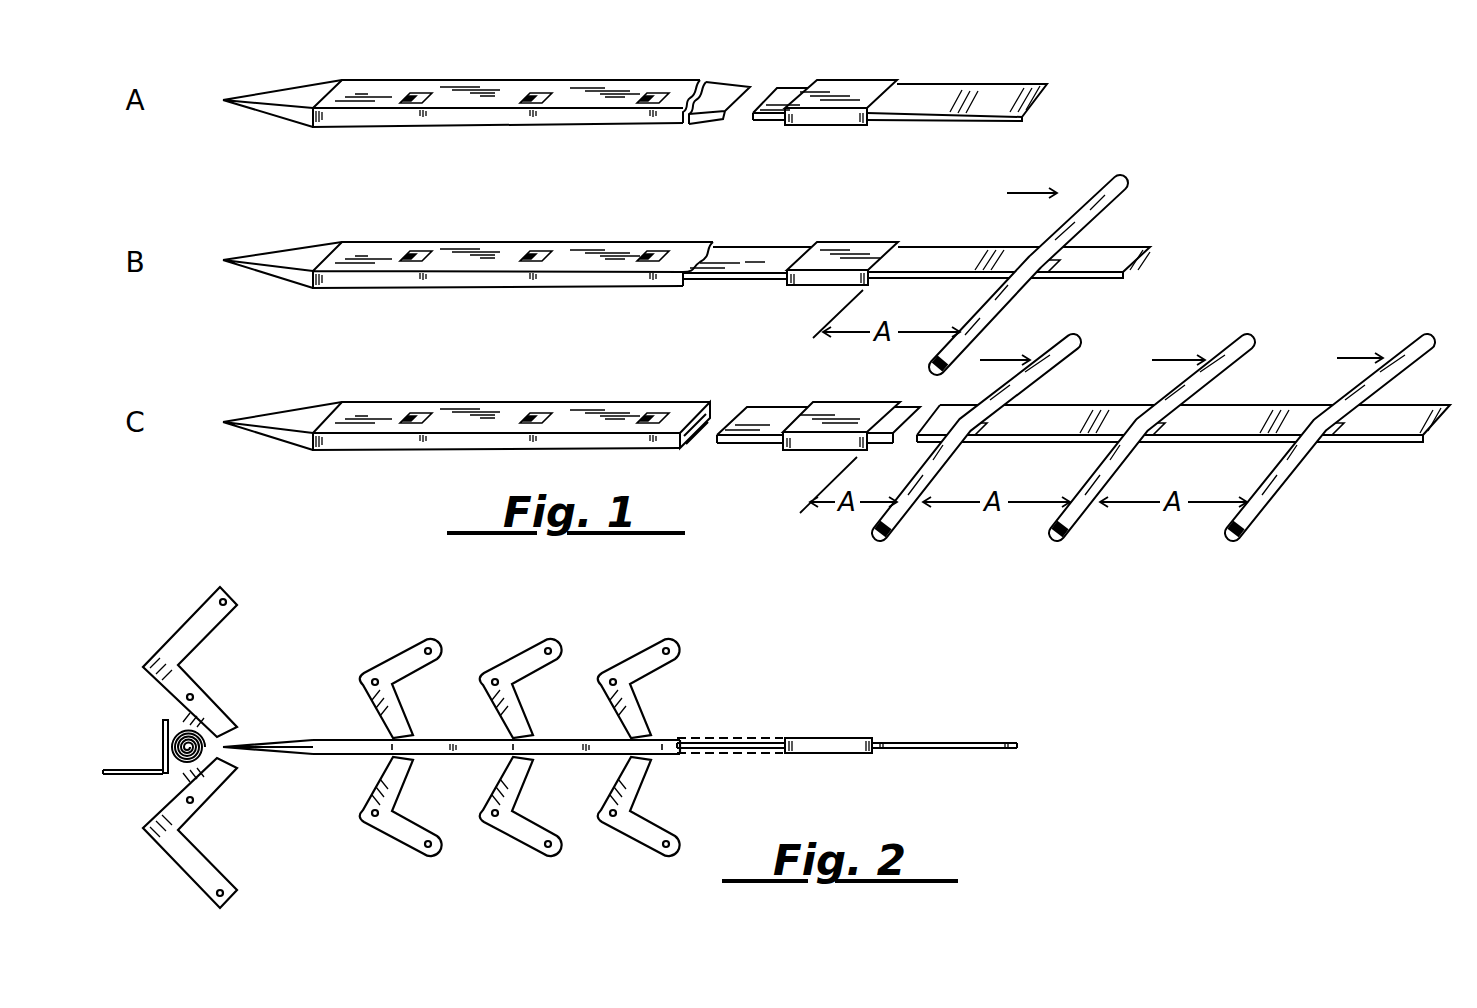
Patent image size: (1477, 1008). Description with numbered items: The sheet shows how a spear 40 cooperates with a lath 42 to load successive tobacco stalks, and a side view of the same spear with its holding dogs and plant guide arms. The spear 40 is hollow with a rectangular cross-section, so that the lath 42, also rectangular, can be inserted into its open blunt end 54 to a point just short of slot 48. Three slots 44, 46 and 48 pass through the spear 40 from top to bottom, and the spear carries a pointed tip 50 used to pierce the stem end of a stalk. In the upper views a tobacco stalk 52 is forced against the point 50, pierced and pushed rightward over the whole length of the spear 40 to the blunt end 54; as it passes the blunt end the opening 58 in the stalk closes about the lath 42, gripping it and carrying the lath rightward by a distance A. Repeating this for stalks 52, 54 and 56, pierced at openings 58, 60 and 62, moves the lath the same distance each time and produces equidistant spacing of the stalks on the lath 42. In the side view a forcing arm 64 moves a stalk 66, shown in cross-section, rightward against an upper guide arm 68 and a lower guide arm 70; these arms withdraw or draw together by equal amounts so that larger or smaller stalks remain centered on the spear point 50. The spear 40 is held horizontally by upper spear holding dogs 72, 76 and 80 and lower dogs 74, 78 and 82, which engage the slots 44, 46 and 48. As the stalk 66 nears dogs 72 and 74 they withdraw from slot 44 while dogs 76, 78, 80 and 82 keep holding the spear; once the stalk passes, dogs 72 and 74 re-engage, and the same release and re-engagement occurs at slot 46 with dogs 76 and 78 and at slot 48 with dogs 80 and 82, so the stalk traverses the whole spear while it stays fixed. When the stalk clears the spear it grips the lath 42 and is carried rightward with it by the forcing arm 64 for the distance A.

In FIG. 1, the spear 40 is at (372, 77).
In FIG. 2, the spear 40 is at (347, 740).
In FIG. 1, the lath 42 is at (997, 84).
In FIG. 2, the lath 42 is at (973, 743).
In FIG. 1, the slot 44 is at (420, 94).
In FIG. 2, the slot 44 is at (412, 744).
In FIG. 1, the slot 46 is at (538, 94).
In FIG. 2, the slot 46 is at (529, 744).
In FIG. 1, the slot 48 is at (658, 94).
In FIG. 2, the slot 48 is at (654, 743).
In FIG. 1, the pointed tip 50 is at (290, 97).
In FIG. 2, the pointed tip 50 is at (277, 740).
In FIG. 1, the tobacco stalk 52 is at (1122, 185).
In FIG. 1, the blunt end 54 is at (897, 247).
In FIG. 1, the tobacco stalk 56 is at (1075, 344).
In FIG. 1, the opening 58 is at (1070, 242).
In FIG. 1, the opening 60 is at (1147, 444).
In FIG. 1, the opening 62 is at (968, 442).
In FIG. 2, the forcing arm 64 is at (163, 728).
In FIG. 2, the stalk 66 is at (183, 767).
In FIG. 2, the upper guide arm 68 is at (182, 672).
In FIG. 2, the lower guide arm 70 is at (190, 843).
In FIG. 2, the upper spear holding dog 72 is at (393, 657).
In FIG. 2, the lower spear holding dog 74 is at (393, 838).
In FIG. 2, the upper spear holding dog 76 is at (513, 657).
In FIG. 2, the lower spear holding dog 78 is at (513, 838).
In FIG. 2, the upper spear holding dog 80 is at (633, 657).
In FIG. 2, the lower spear holding dog 82 is at (633, 838).